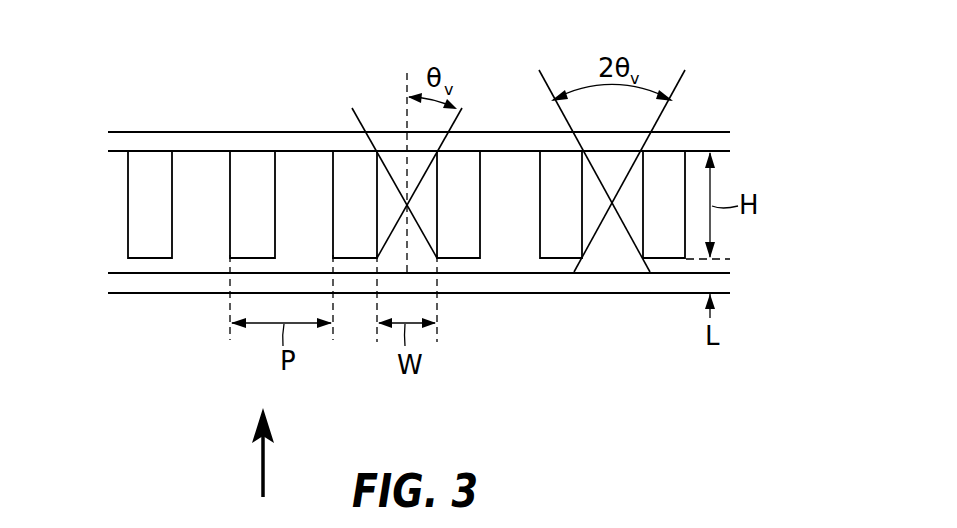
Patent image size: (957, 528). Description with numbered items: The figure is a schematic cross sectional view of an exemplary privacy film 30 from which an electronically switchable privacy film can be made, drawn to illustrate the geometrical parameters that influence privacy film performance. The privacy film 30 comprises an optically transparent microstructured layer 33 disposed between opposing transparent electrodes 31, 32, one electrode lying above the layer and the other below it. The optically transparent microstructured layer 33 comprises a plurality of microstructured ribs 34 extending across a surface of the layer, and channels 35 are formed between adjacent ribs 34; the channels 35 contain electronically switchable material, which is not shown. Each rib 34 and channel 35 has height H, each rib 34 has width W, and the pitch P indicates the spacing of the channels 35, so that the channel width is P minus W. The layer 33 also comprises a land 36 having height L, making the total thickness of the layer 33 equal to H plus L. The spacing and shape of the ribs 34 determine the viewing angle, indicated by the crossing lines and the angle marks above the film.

The privacy film 30 is at (417, 176).
The transparent electrode 31 is at (151, 137).
The transparent electrode 32 is at (148, 282).
The optically transparent microstructured layer 33 is at (364, 210).
The microstructured rib 34 is at (307, 150).
The channel 35 is at (253, 150).
The land 36 is at (741, 266).